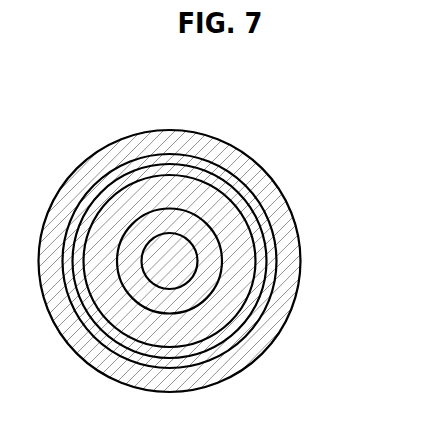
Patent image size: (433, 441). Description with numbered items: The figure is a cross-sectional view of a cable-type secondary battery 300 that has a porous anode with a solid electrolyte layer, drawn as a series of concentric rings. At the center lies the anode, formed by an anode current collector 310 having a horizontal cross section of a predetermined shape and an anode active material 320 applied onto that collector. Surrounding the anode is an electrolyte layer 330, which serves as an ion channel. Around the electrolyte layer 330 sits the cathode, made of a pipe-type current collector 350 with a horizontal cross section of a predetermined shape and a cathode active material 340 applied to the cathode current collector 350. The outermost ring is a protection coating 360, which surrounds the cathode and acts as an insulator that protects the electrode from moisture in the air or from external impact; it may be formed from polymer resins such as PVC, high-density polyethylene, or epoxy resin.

The cable-type secondary battery 300 is at (321, 122).
The anode current collector 310 is at (187, 260).
The anode active material 320 is at (207, 240).
The electrolyte layer 330 is at (230, 218).
The cathode active material 340 is at (233, 193).
The pipe-type current collector 350 is at (235, 183).
The protection coating 360 is at (228, 148).